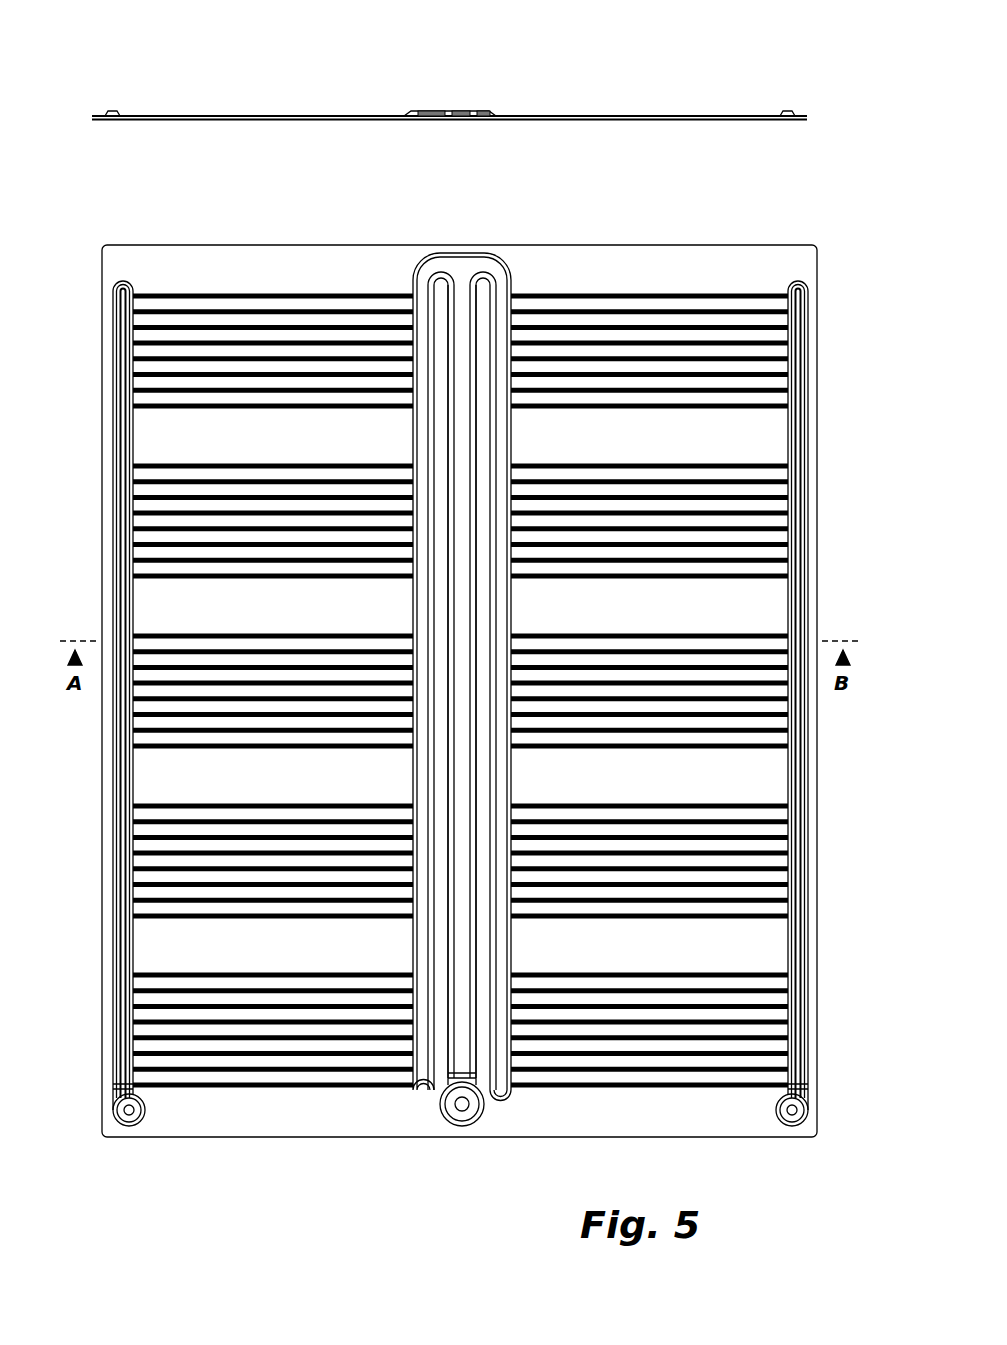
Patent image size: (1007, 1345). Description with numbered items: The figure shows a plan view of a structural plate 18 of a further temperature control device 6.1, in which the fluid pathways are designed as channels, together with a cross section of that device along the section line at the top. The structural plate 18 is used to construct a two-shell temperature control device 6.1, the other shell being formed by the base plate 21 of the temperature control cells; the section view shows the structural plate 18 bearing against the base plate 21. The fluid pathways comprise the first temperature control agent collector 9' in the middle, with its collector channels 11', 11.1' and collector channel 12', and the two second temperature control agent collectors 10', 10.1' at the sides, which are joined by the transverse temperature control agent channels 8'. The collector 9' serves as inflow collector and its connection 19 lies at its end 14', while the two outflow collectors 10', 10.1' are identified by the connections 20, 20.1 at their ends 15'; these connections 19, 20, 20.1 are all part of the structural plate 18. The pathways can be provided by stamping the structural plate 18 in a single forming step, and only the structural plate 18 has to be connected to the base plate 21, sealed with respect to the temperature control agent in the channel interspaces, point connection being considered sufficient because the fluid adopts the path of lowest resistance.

The temperature control device 6.1 is at (597, 92).
The structural plate 18 is at (265, 110).
The base plate 21 is at (208, 124).
The first temperature control agent collector 9' is at (501, 560).
The collector channel 12' is at (454, 594).
The collector channel 11.1' is at (383, 607).
The collector channel 11' is at (524, 607).
The second temperature control agent collector 10.1' is at (121, 569).
The second temperature control agent collector 10' is at (788, 570).
The temperature control agent channel 8' is at (460, 643).
The connection 19 is at (454, 1108).
The end 14' is at (504, 1136).
The end 15' is at (460, 1137).
The connection 20.1 is at (141, 1110).
The connection 20 is at (774, 1112).